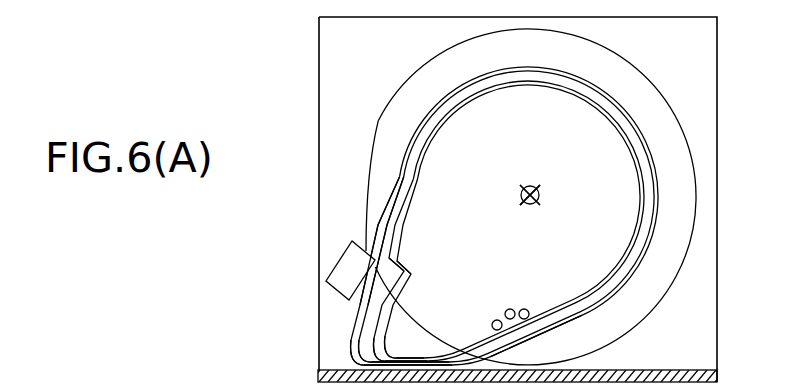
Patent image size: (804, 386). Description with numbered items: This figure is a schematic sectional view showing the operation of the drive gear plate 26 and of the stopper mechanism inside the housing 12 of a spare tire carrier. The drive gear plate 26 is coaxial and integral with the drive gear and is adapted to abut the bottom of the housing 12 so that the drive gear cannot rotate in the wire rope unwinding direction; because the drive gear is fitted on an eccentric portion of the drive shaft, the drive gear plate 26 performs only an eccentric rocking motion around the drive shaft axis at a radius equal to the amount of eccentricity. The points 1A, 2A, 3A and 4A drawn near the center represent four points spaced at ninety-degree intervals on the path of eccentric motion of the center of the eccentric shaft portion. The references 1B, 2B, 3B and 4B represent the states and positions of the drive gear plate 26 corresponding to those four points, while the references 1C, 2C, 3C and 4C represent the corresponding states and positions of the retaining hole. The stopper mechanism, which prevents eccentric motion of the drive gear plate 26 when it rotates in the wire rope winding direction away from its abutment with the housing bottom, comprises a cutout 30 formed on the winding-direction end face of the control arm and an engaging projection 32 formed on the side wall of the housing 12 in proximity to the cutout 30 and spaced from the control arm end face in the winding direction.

The housing 12 is at (326, 44).
The drive gear plate 26 is at (633, 203).
The engaging projection 32 is at (338, 283).
The cutout 30 is at (405, 272).
The drive gear plate position 4B is at (410, 140).
The drive gear plate position 3B is at (383, 338).
The drive gear plate position 1B is at (348, 346).
The drive gear plate position 2B is at (352, 364).
The eccentric path point 4A is at (521, 189).
The eccentric path point 3A is at (540, 184).
The eccentric path point 1A is at (522, 206).
The eccentric path point 2A is at (541, 206).
The retaining hole position 1C is at (494, 320).
The retaining hole position 4C is at (510, 309).
The retaining hole position 3C is at (528, 310).
The retaining hole position 2C is at (527, 328).